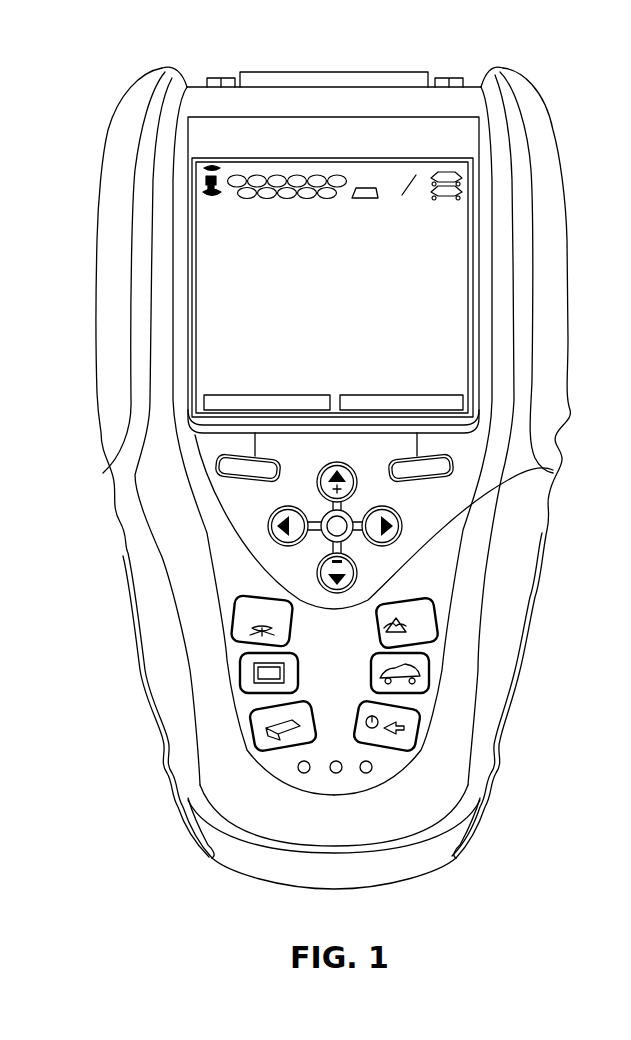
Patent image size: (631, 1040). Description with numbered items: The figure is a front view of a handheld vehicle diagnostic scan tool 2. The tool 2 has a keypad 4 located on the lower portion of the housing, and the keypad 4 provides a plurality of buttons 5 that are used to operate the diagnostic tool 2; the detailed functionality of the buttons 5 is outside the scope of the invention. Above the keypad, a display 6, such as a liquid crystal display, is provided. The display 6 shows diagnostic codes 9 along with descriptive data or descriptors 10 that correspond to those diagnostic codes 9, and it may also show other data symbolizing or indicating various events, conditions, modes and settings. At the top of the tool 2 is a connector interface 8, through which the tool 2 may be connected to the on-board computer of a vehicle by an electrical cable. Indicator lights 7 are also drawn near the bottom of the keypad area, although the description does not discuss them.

The handheld vehicle diagnostic scan tool 2 is at (88, 906).
The keypad 4 is at (227, 795).
The buttons 5 is at (380, 596).
The display 6 is at (200, 307).
The indicator lights 7 is at (370, 768).
The connector interface 8 is at (348, 76).
The diagnostic codes 9 is at (200, 213).
The descriptors 10 is at (200, 240).